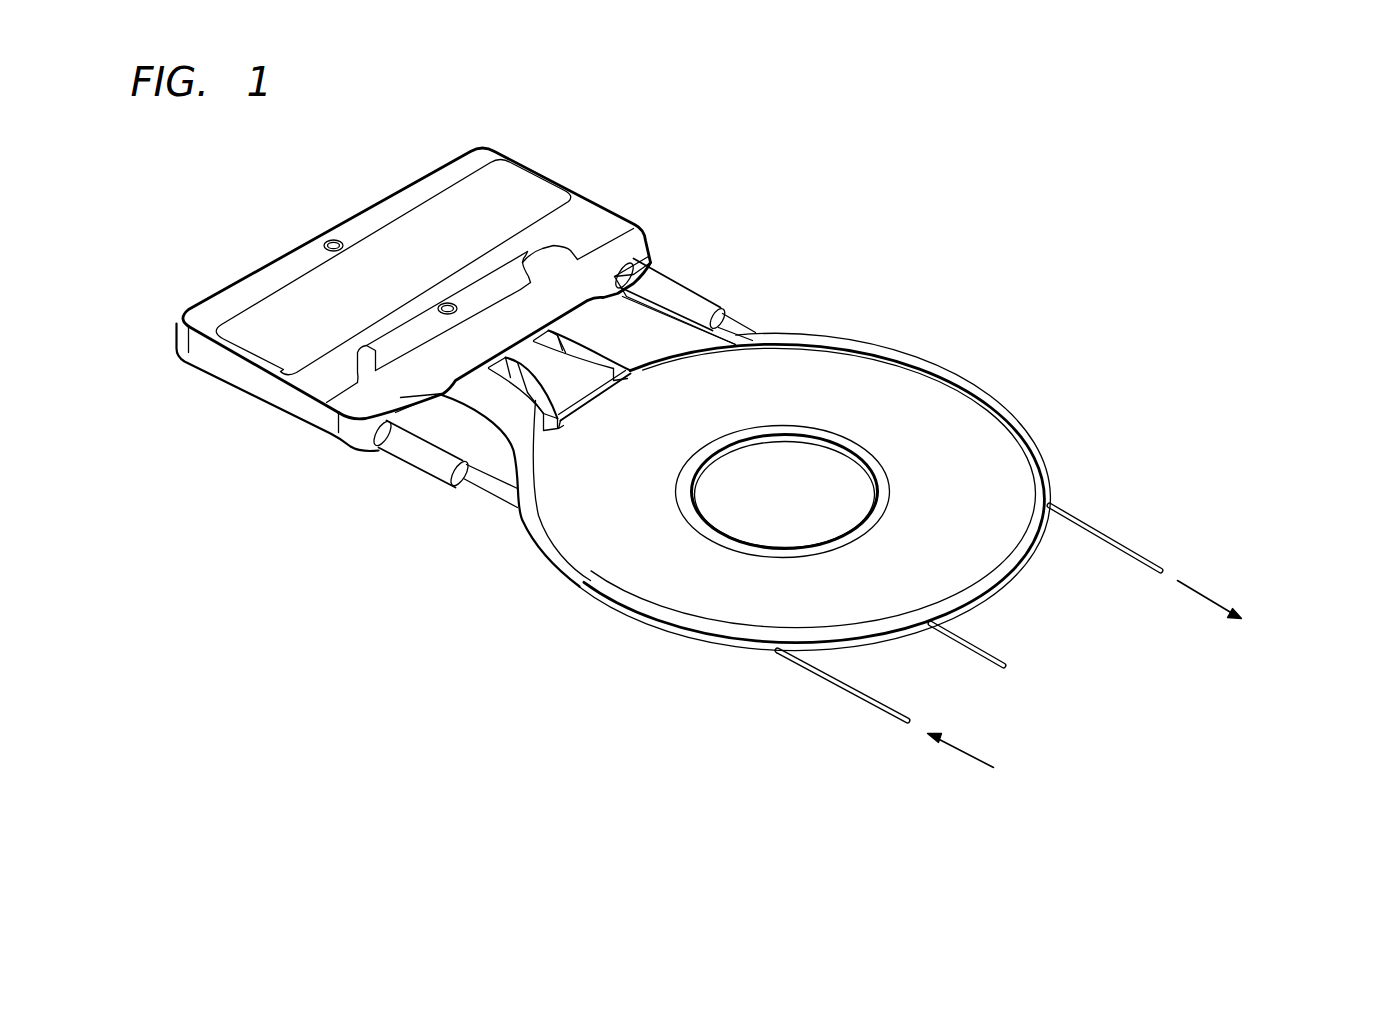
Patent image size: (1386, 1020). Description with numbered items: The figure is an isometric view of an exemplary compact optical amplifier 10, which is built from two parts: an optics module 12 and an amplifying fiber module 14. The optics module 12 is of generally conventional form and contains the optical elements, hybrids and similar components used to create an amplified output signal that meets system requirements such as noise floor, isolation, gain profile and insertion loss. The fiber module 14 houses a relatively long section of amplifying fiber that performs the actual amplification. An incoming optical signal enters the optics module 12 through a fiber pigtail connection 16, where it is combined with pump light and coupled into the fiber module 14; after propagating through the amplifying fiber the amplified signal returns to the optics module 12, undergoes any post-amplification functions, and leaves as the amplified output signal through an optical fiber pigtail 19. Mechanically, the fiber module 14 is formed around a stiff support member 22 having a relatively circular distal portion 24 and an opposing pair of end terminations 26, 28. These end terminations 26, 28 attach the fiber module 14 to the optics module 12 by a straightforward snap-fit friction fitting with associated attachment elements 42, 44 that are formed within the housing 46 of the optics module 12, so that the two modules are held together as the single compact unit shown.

The compact optical amplifier 10 is at (258, 191).
The optics module 12 is at (313, 385).
The amplifying fiber module 14 is at (930, 352).
The fiber pigtail connection 16 is at (431, 447).
The optical fiber pigtail 19 is at (672, 290).
The stiff support member 22 is at (537, 595).
The circular distal portion 24 is at (690, 626).
The end termination 26 is at (398, 347).
The end termination 28 is at (540, 258).
The attachment element 42 is at (363, 352).
The attachment element 44 is at (512, 262).
The housing 46 is at (200, 350).